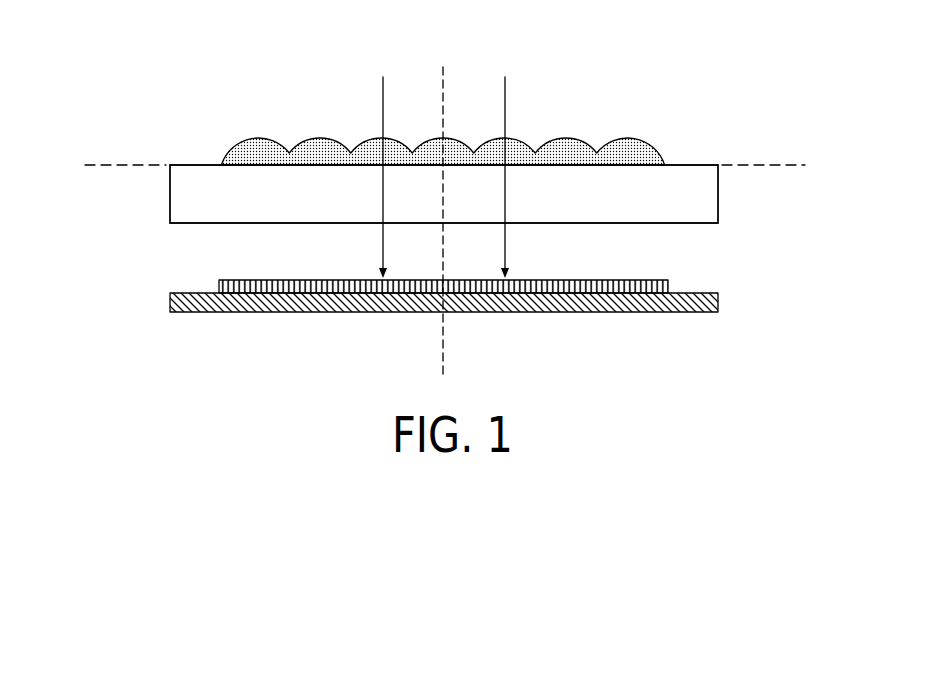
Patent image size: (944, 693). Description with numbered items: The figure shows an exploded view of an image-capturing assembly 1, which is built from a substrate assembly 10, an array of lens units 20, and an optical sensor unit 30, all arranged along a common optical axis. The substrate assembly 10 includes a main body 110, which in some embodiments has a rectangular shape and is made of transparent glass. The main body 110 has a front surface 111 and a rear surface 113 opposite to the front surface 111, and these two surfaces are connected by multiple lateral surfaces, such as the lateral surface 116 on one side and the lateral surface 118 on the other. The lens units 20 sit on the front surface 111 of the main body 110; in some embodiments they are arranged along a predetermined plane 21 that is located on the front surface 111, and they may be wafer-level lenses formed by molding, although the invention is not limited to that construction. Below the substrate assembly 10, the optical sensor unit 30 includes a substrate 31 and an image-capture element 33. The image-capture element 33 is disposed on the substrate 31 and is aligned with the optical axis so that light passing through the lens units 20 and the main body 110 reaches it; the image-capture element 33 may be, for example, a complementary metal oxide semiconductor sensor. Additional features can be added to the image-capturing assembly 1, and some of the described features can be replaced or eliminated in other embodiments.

The image-capturing assembly 1 is at (458, 195).
The substrate assembly 10 is at (447, 169).
The main body 110 is at (708, 195).
The front surface 111 is at (194, 165).
The rear surface 113 is at (193, 225).
The lateral surface 116 is at (170, 205).
The lateral surface 118 is at (718, 212).
The lens units 20 is at (633, 140).
The predetermined plane 21 is at (462, 162).
The optical sensor unit 30 is at (489, 333).
The substrate 31 is at (342, 300).
The image-capture element 33 is at (278, 293).